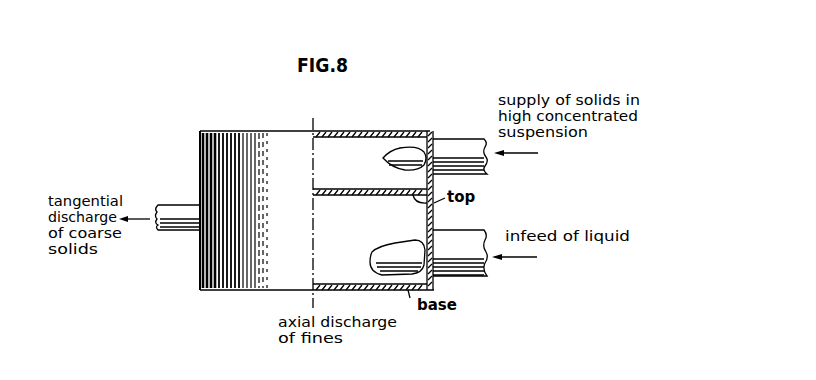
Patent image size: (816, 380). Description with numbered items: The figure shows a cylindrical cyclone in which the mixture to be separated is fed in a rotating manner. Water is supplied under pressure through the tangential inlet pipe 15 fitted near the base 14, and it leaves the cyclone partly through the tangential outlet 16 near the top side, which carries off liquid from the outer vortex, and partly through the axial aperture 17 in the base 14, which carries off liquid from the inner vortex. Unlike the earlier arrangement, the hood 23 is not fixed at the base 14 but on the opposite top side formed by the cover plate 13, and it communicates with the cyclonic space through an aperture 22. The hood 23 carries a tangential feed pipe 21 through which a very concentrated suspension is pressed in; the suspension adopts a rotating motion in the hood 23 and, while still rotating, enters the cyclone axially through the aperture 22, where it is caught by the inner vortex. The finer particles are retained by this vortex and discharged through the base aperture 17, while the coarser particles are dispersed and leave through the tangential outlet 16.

The cover plate 13 is at (392, 237).
The wall constituting the base 14 is at (391, 290).
The tangential inlet 15 is at (442, 232).
The tangential outlet 16 is at (177, 229).
The axial aperture 17 is at (329, 302).
The tangential feed pipe 21 is at (437, 141).
The aperture 22 is at (327, 206).
The hood 23 is at (368, 131).